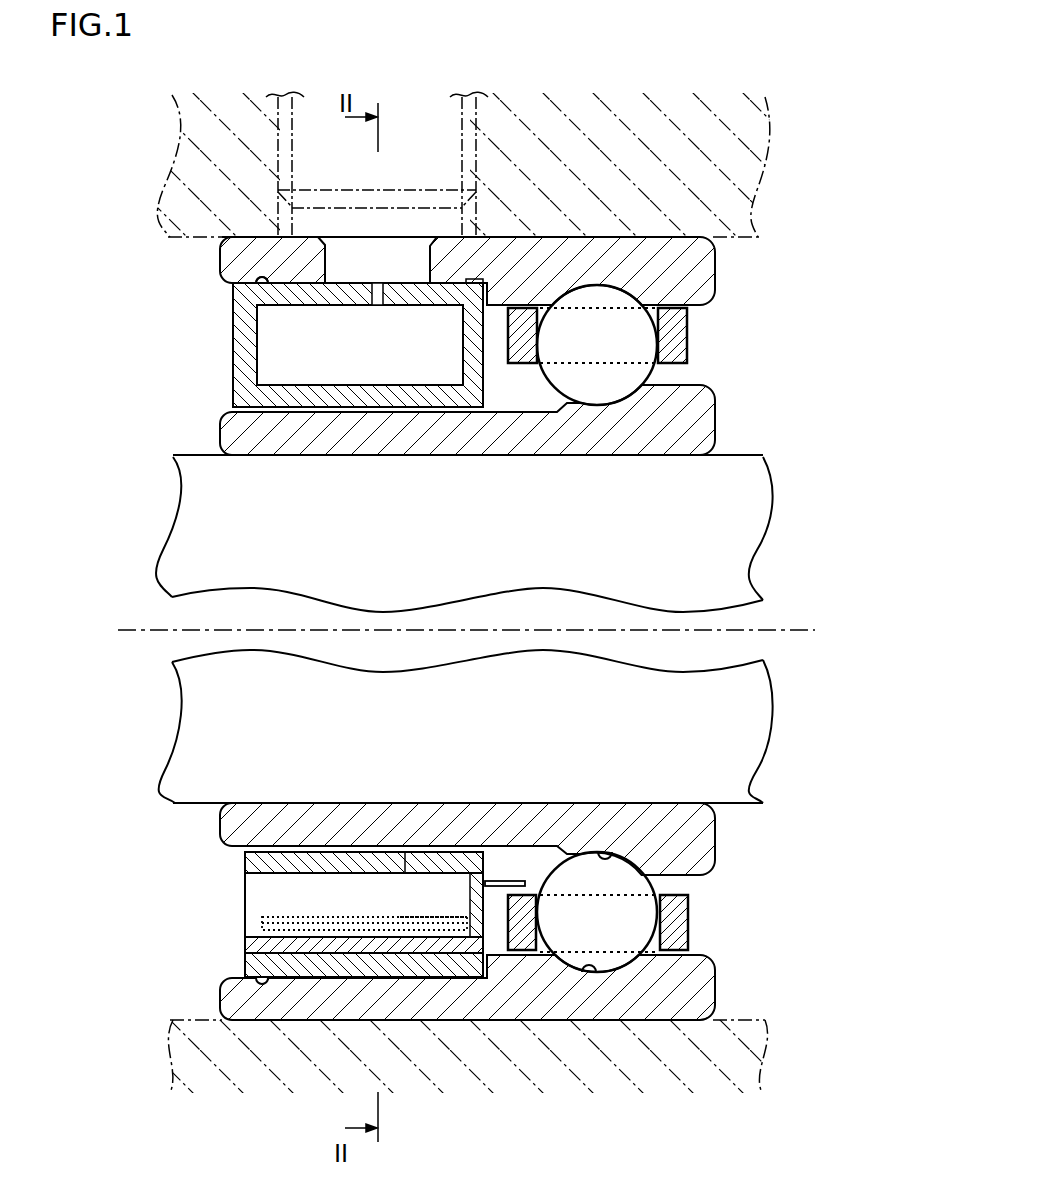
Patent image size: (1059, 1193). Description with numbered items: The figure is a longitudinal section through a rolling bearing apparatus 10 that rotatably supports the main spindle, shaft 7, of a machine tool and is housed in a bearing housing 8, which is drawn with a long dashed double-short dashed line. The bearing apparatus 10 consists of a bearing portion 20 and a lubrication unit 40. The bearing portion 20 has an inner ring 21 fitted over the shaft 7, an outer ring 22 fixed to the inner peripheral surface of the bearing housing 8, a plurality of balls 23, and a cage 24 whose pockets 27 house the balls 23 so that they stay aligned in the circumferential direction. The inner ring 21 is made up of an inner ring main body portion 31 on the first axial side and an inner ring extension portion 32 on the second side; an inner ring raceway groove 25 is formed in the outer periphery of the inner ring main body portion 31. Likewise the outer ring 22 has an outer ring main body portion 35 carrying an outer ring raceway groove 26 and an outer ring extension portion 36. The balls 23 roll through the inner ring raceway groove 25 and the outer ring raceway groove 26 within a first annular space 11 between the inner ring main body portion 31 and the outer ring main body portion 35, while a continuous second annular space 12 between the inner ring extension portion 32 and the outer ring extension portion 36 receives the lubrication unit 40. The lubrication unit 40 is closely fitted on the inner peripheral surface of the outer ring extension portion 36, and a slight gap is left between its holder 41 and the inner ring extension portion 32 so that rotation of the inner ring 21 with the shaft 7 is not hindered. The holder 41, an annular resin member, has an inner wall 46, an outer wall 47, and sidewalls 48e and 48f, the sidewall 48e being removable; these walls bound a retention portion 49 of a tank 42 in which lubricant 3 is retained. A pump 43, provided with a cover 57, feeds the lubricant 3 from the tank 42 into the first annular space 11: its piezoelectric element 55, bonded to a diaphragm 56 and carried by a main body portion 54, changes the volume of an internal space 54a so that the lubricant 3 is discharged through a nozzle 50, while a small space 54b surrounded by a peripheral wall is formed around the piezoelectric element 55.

The lubricant 3 is at (366, 363).
The shaft 7 is at (766, 456).
The bearing housing 8 is at (673, 133).
The rolling bearing apparatus 10 is at (508, 323).
The first annular space 11 is at (652, 621).
The second annular space 12 is at (340, 669).
The bearing portion 20 is at (508, 217).
The inner ring 21 is at (489, 436).
The outer ring 22 is at (705, 256).
The balls 23 is at (600, 322).
The cage 24 is at (690, 328).
The inner ring raceway groove 25 is at (612, 861).
The outer ring raceway groove 26 is at (589, 975).
The pockets 27 is at (540, 965).
The inner ring main body portion 31 is at (467, 804).
The inner ring extension portion 32 is at (315, 822).
The outer ring main body portion 35 is at (457, 1041).
The outer ring extension portion 36 is at (275, 1012).
The lubrication unit 40 is at (256, 275).
The holder 41 is at (271, 420).
The tank 42 is at (340, 414).
The pump 43 is at (406, 868).
The inner wall 46 is at (373, 858).
The outer wall 47 is at (316, 964).
The sidewall 48e is at (240, 330).
The sidewall 48f is at (477, 355).
The retention portion 49 is at (376, 368).
The nozzle 50 is at (512, 880).
The main body portion 54 is at (245, 903).
The internal space 54a is at (280, 903).
The small space 54b is at (248, 965).
The piezoelectric element 55 is at (374, 930).
The diaphragm 56 is at (421, 932).
The cover 57 is at (245, 947).